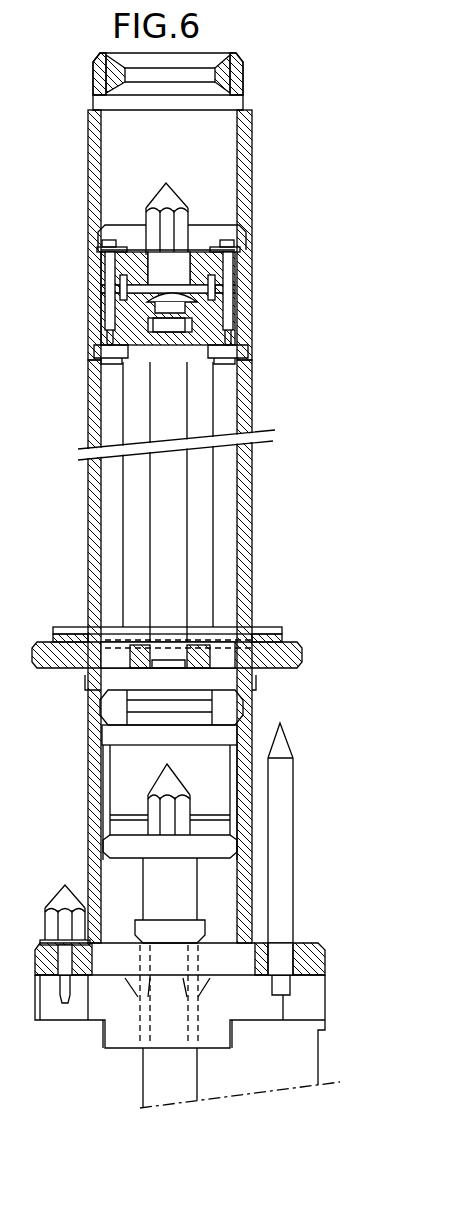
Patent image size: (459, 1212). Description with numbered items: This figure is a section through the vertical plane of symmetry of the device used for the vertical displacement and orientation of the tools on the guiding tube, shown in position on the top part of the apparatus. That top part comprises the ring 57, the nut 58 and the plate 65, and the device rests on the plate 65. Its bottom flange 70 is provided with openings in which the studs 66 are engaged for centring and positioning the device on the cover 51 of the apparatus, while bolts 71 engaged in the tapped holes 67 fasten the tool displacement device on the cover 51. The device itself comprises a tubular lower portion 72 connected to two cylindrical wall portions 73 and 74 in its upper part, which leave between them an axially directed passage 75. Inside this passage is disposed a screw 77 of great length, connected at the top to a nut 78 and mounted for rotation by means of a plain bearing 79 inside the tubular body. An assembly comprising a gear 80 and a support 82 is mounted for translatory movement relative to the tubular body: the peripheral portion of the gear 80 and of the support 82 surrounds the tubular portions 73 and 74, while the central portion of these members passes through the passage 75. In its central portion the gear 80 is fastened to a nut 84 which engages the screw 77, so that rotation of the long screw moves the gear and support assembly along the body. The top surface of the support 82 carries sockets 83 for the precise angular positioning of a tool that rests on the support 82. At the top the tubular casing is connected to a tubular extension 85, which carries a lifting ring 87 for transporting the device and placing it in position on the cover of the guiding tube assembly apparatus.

The lifting ring 87 is at (246, 78).
The tubular extension 85 is at (249, 190).
The nut 78 is at (180, 230).
The plain bearing 79 is at (205, 302).
The cylindrical wall portion 74 is at (95, 485).
The screw 77 is at (152, 508).
The axially directed passage 75 is at (133, 537).
The cylindrical wall portion 73 is at (250, 530).
The nut 84 is at (150, 640).
The sockets 83 is at (258, 627).
The support 82 is at (275, 640).
The gear 80 is at (283, 662).
The ring 57 is at (110, 700).
The nut 58 is at (153, 812).
The studs 66 is at (285, 785).
The tubular lower portion 72 is at (252, 855).
The bolts 71 is at (62, 890).
The bottom flange 70 is at (312, 943).
The tapped holes 67 is at (65, 1012).
The plate 65 is at (308, 995).
The cover 51 is at (315, 1048).